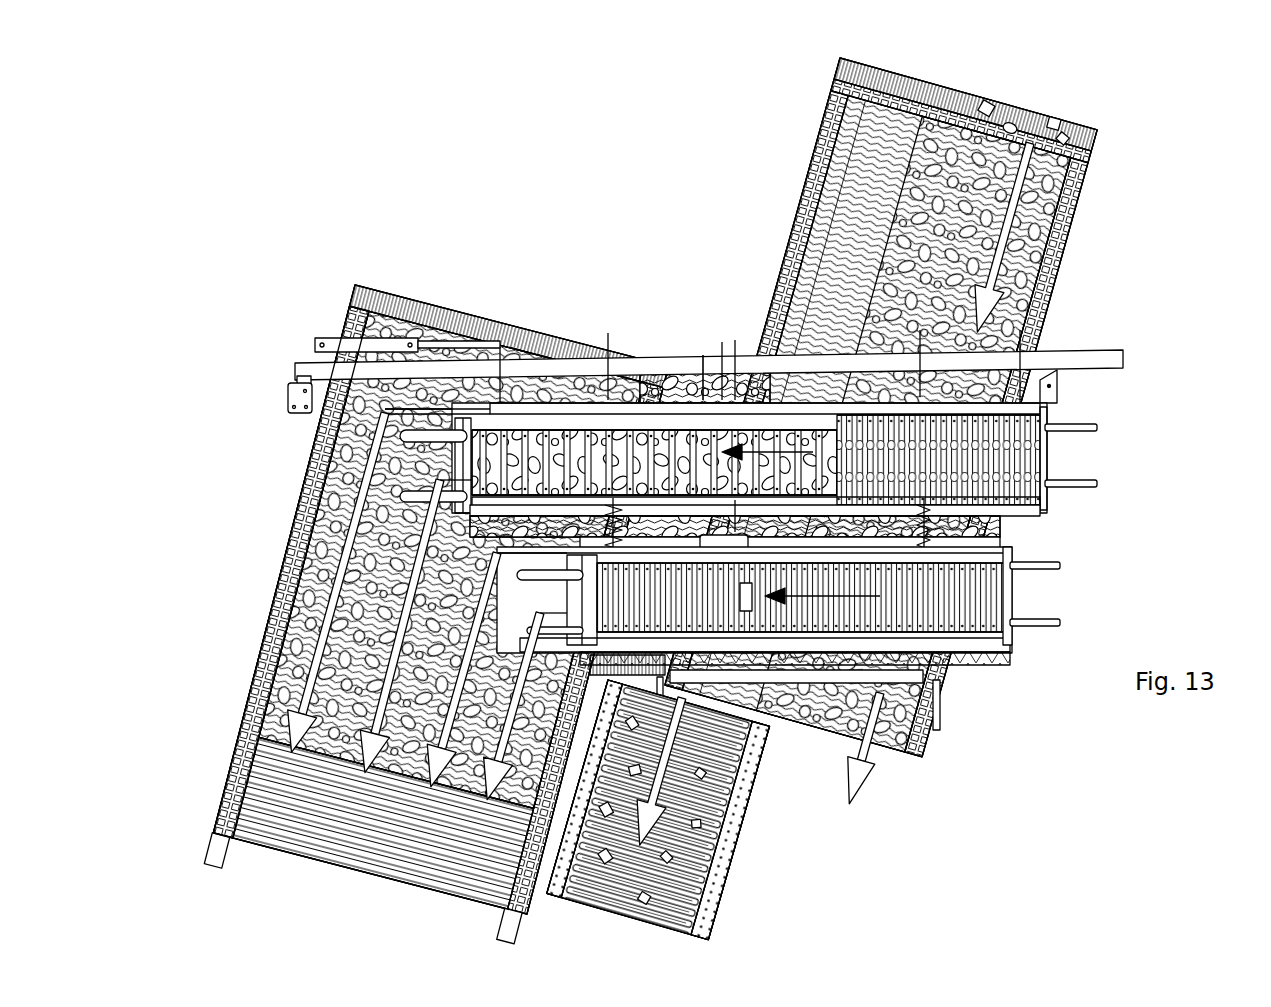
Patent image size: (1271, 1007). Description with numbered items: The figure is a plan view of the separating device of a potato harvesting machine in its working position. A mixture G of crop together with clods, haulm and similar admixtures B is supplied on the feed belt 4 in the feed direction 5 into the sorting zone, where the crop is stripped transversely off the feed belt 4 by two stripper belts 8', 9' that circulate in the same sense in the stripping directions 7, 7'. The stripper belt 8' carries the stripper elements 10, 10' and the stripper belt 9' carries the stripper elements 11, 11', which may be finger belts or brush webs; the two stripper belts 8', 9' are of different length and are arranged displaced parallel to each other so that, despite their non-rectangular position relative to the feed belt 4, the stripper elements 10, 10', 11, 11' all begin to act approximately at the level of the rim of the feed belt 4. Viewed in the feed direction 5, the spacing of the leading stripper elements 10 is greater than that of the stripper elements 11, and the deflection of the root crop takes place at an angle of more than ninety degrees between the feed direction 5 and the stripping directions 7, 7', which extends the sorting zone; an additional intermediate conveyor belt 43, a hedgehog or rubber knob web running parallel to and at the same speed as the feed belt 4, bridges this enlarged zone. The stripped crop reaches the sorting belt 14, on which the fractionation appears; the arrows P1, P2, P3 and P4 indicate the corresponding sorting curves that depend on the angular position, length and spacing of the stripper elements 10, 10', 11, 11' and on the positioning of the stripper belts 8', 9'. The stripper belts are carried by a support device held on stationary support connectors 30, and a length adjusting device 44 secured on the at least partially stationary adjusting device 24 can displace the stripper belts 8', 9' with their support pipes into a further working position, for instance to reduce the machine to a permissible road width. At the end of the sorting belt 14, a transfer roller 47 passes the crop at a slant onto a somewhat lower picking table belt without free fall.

The feed belt 4 is at (850, 163).
The feed direction 5 is at (1070, 240).
The stripping direction 7 is at (716, 394).
The stripping direction 7' is at (754, 690).
The stripper belt 8' is at (839, 638).
The stripper belt 9' is at (1110, 358).
The stripper element 10 is at (1096, 403).
The stripper element 10' is at (1109, 461).
The stripper element 11 is at (1071, 542).
The stripper element 11' is at (1079, 598).
The sorting belt 14 is at (398, 283).
The adjusting device 24 is at (290, 397).
The stationary support connector 30 is at (1045, 340).
The intermediate conveyor belt 43 is at (703, 355).
The length adjusting device 44 is at (338, 338).
The transfer roller 47 is at (293, 545).
The admixtures B is at (698, 842).
The mixture G is at (1012, 105).
The sorting curve arrow P1 is at (290, 523).
The sorting curve arrow P2 is at (265, 612).
The sorting curve arrow P3 is at (250, 688).
The sorting curve arrow P4 is at (247, 730).